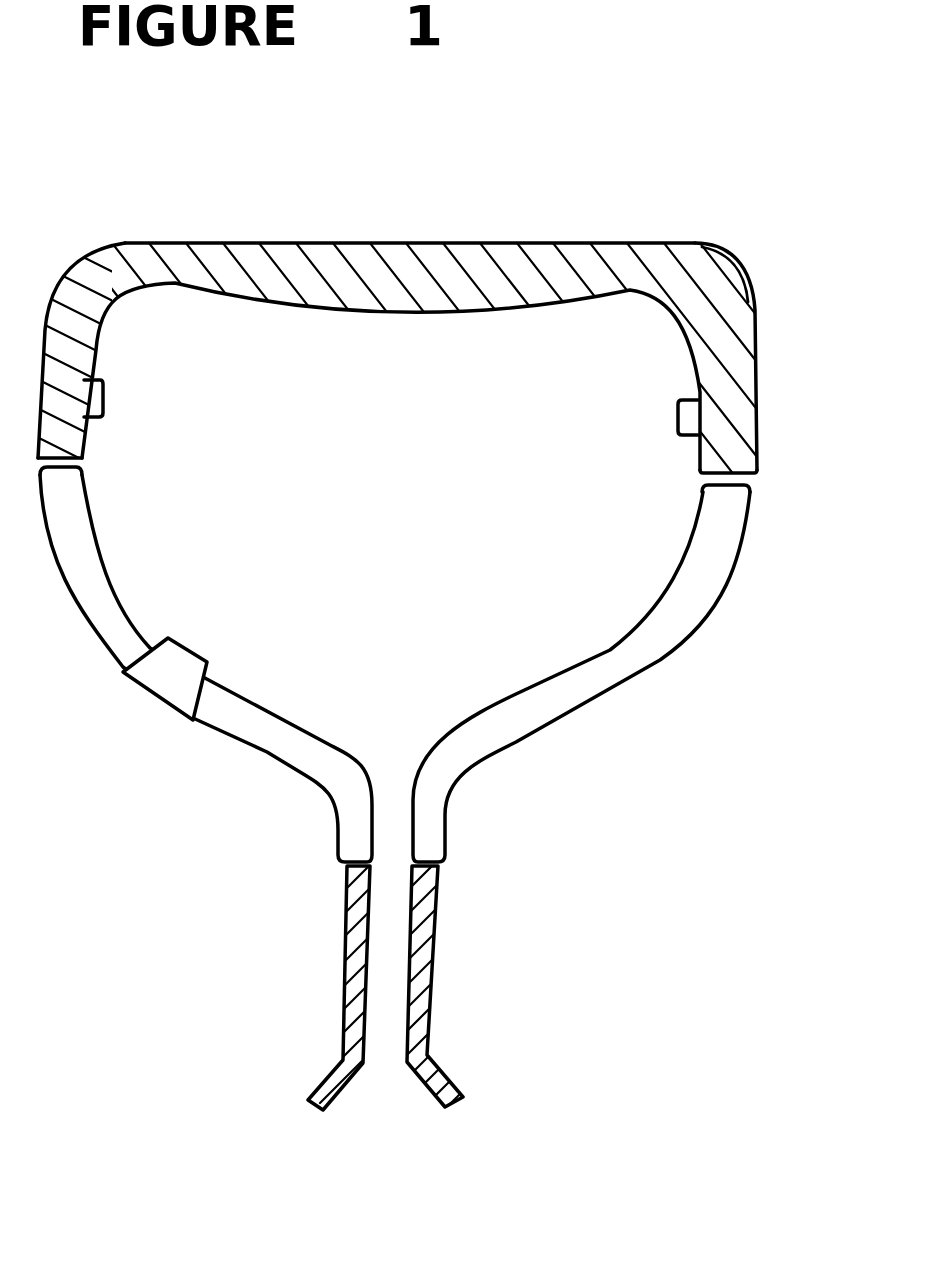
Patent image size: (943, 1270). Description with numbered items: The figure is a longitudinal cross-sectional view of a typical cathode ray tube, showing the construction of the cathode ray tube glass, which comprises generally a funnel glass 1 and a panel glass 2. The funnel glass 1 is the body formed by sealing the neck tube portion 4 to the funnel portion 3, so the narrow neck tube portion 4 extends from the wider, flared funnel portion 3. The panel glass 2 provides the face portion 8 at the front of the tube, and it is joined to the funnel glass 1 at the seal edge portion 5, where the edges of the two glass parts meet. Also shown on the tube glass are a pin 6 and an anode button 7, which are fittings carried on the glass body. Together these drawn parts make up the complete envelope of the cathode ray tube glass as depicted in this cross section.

The funnel glass 1 is at (272, 826).
The panel glass 2 is at (752, 252).
The funnel portion 3 is at (667, 618).
The neck tube portion 4 is at (422, 942).
The seal edge portion 5 is at (742, 497).
The pin 6 is at (687, 417).
The anode button 7 is at (162, 683).
The face portion 8 is at (470, 243).